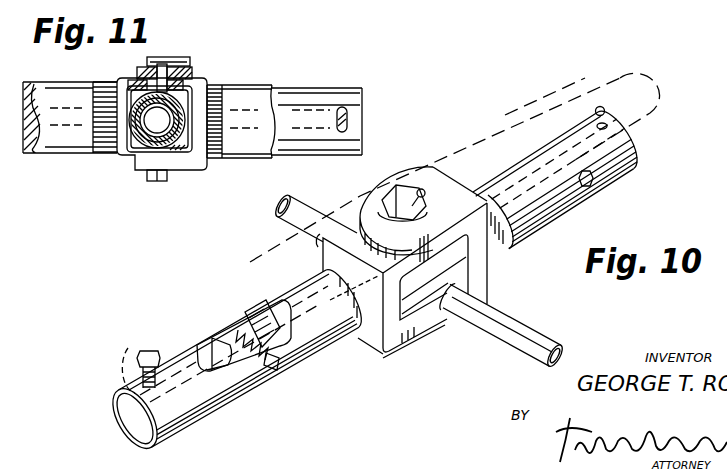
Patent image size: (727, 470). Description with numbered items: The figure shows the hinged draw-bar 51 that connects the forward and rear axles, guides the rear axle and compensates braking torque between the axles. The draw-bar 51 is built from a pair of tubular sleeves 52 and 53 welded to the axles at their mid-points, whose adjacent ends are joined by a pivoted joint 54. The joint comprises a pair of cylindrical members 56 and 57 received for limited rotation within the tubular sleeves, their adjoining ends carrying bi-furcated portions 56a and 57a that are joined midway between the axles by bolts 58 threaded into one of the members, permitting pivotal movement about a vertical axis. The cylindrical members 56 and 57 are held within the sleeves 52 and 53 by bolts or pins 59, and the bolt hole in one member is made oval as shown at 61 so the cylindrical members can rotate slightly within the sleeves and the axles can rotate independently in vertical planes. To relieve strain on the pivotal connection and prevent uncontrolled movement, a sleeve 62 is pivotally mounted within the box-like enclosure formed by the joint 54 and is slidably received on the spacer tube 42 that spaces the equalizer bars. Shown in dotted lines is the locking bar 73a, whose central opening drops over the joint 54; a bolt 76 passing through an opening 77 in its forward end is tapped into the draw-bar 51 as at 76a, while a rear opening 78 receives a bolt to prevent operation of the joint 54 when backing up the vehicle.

In FIG. 10, the spacer tube 42 is at (530, 330).
In FIG. 10, the draw-bar 51 is at (357, 334).
In FIG. 10, the tubular sleeve 52 is at (221, 394).
In FIG. 10, the tubular sleeve 53 is at (627, 182).
In FIG. 11, the pivoted joint 54 is at (193, 168).
In FIG. 10, the pivoted joint 54 is at (438, 337).
In FIG. 11, the cylindrical member 56 is at (33, 157).
In FIG. 10, the cylindrical member 56 is at (318, 341).
In FIG. 10, the bi-furcated portion 56a is at (316, 246).
In FIG. 11, the cylindrical member 57 is at (333, 88).
In FIG. 10, the cylindrical member 57 is at (510, 246).
In FIG. 10, the bi-furcated portion 57a is at (440, 187).
In FIG. 11, the bolt 58 is at (170, 58).
In FIG. 10, the bolt 58 is at (403, 190).
In FIG. 10, the bolt or pin 59 is at (276, 362).
In FIG. 11, the oval bolt hole 61 is at (347, 113).
In FIG. 10, the oval bolt hole 61 is at (240, 324).
In FIG. 11, the sleeve 62 is at (133, 138).
In FIG. 10, the sleeve 62 is at (478, 283).
In FIG. 10, the locking bar 73a is at (247, 267).
In FIG. 10, the bolt 76 is at (140, 352).
In FIG. 10, the tapped attachment point 76a is at (627, 137).
In FIG. 10, the opening 77 is at (138, 366).
In FIG. 10, the opening 78 is at (607, 114).